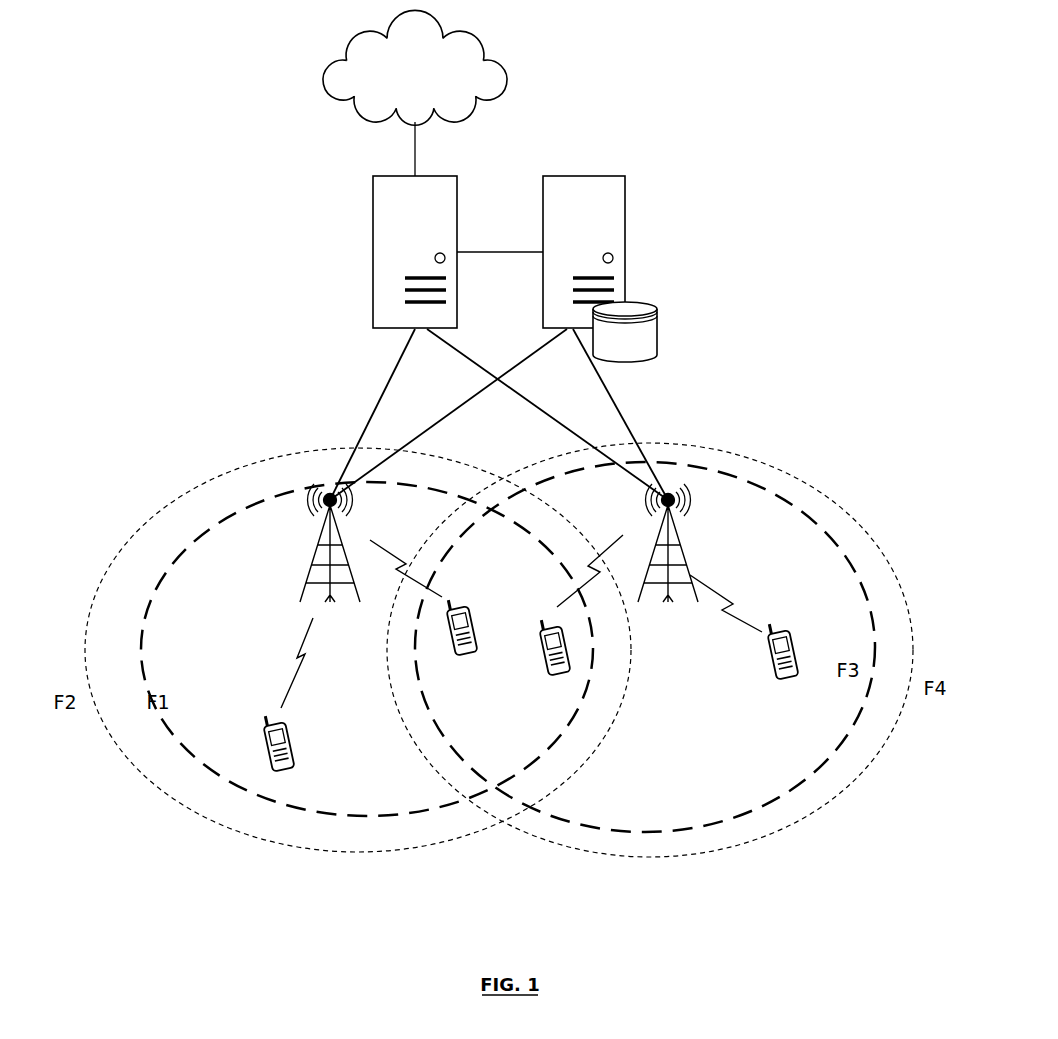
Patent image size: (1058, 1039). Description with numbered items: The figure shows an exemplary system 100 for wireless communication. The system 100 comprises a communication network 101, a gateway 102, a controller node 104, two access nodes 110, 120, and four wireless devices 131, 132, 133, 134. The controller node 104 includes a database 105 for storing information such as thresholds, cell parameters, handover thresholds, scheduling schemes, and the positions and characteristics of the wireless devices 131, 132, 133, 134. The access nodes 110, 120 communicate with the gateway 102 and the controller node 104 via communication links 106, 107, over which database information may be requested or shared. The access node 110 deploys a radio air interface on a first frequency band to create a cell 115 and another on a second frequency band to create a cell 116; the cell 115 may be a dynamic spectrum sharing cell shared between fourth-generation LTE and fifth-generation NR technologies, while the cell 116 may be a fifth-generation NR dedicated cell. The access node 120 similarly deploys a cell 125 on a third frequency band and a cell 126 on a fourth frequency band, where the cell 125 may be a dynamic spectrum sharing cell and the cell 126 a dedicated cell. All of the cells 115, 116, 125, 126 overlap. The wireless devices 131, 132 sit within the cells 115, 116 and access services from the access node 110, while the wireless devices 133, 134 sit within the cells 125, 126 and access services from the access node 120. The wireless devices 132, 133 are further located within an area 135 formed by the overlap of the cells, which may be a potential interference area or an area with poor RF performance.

The system 100 is at (591, 88).
The communication network 101 is at (398, 80).
The gateway 102 is at (373, 213).
The controller node 104 is at (625, 232).
The database 105 is at (658, 335).
The communication link 106 is at (478, 370).
The communication link 107 is at (443, 415).
The access node 110 is at (315, 575).
The access node 120 is at (688, 575).
The cell 115 is at (367, 818).
The cell 116 is at (197, 813).
The cell 125 is at (637, 834).
The cell 126 is at (768, 843).
The wireless device 131 is at (277, 770).
The wireless device 132 is at (454, 648).
The wireless device 133 is at (557, 672).
The wireless device 134 is at (788, 674).
The area 135 is at (497, 756).